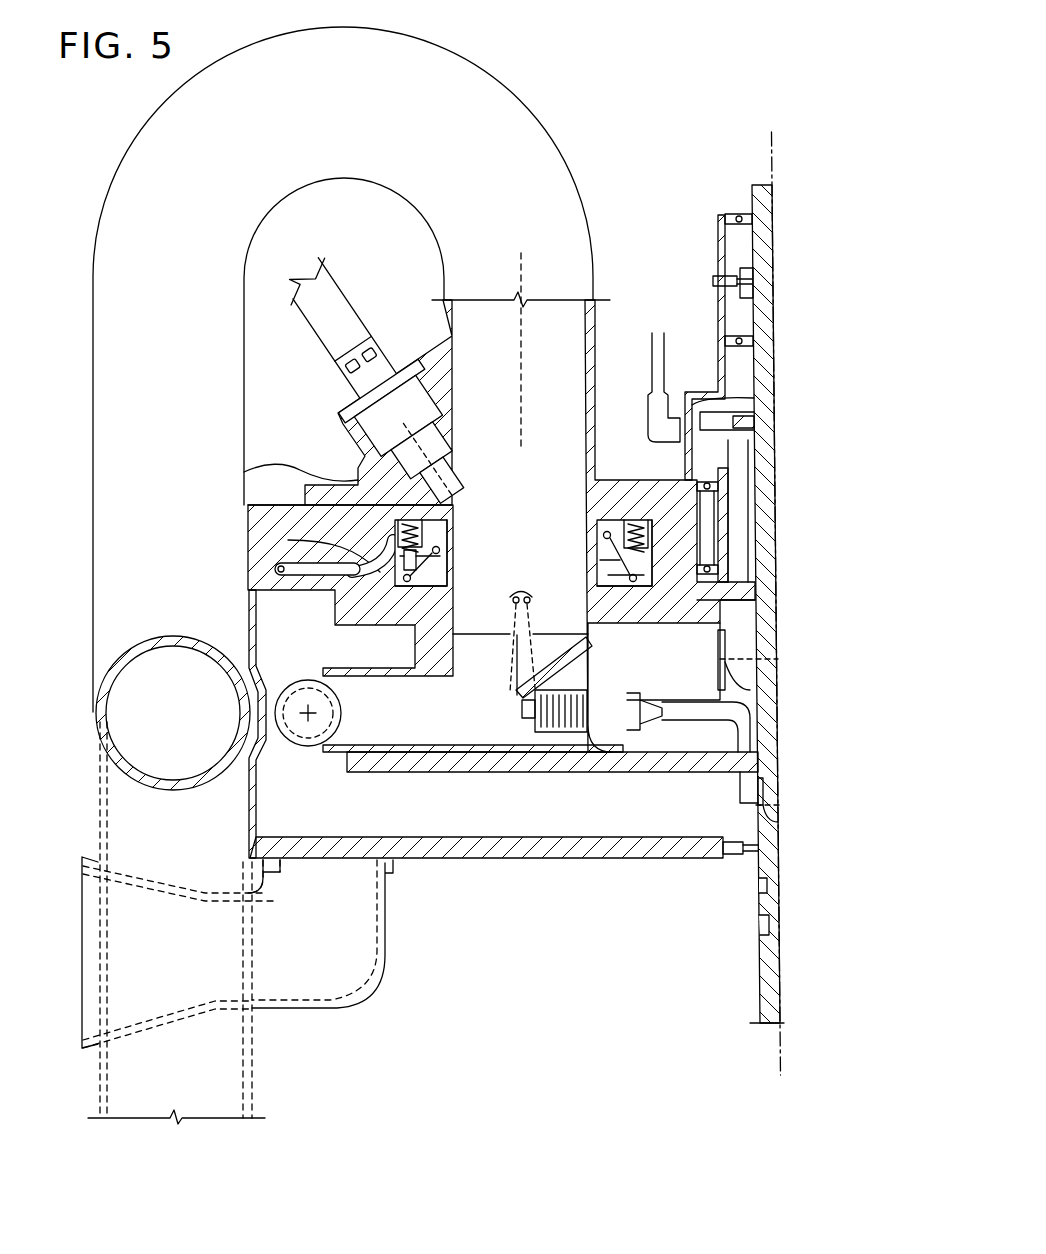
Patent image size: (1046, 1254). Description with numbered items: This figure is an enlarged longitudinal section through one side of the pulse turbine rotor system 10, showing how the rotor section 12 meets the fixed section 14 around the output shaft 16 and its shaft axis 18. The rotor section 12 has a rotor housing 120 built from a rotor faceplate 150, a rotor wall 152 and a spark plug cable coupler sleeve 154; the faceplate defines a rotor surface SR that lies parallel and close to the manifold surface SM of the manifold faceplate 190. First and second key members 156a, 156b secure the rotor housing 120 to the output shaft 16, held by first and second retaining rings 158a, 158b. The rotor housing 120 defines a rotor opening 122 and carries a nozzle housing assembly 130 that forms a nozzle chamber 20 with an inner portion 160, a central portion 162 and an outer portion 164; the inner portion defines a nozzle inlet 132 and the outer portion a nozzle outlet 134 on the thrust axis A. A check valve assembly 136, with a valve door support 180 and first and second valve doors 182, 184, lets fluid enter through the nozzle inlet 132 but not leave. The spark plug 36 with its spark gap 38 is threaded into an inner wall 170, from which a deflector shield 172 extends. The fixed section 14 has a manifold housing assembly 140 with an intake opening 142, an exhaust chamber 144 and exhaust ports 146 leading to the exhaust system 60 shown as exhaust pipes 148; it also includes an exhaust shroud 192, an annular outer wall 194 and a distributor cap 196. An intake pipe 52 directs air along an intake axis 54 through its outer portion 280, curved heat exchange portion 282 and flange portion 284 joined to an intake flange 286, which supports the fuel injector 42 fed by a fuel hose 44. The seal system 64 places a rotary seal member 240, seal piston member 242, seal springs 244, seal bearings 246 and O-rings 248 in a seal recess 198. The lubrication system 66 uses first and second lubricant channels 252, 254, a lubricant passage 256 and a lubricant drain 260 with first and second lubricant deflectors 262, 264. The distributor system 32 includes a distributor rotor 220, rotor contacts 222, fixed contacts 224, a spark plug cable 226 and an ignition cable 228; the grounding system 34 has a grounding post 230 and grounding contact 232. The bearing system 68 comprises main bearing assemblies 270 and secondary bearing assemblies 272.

The pulse turbine rotor system 10 is at (645, 95).
The rotor section 12 is at (657, 770).
The fixed section 14 is at (518, 863).
The output shaft 16 is at (760, 998).
The shaft axis 18 is at (779, 1050).
The nozzle chamber 20 is at (429, 693).
The distributor system 32 is at (645, 395).
The grounding system 34 is at (712, 302).
The spark plug 36 is at (548, 745).
The spark gap 38 is at (545, 720).
The fuel injector 42 is at (425, 414).
The fuel hose 44 is at (330, 286).
The intake pipe 52 is at (148, 147).
The intake axis 54 is at (519, 358).
The exhaust system 60 is at (396, 968).
The seal system 64 is at (578, 500).
The lubrication system 66 is at (300, 620).
The bearing system 68 is at (742, 870).
The rotor housing 120 is at (580, 778).
The rotor opening 122 is at (520, 619).
The nozzle housing assembly 130 is at (340, 664).
The nozzle inlet 132 is at (543, 660).
The nozzle outlet 134 is at (312, 726).
The check valve assembly 136 is at (527, 595).
The manifold housing assembly 140 is at (532, 866).
The intake opening 142 is at (497, 402).
The exhaust chamber 144 is at (445, 800).
The exhaust port 146 is at (357, 856).
The exhaust pipe 148 is at (308, 988).
The rotor faceplate 150 is at (387, 620).
The rotor wall 152 is at (660, 770).
The spark plug cable coupler sleeve 154 is at (740, 510).
The first key member 156a is at (738, 642).
The second key member 156b is at (765, 800).
The first retaining ring 158a is at (758, 665).
The second retaining ring 158b is at (769, 812).
The inner portion 160 is at (500, 645).
The central portion 162 is at (430, 716).
The outer portion 164 is at (320, 735).
The inner wall 170 is at (614, 682).
The deflector shield 172 is at (616, 670).
The valve door support 180 is at (533, 580).
The first valve door 182 is at (510, 660).
The second valve door 184 is at (522, 635).
The manifold faceplate 190 is at (290, 522).
The exhaust shroud 192 is at (575, 860).
The annular outer wall 194 is at (250, 792).
The distributor cap 196 is at (722, 250).
The seal recess 198 is at (625, 490).
The distributor rotor 220 is at (716, 428).
The rotor contact 222 is at (716, 418).
The fixed contact 224 is at (716, 410).
The spark plug cable 226 is at (740, 586).
The ignition cable 228 is at (656, 345).
The grounding post 230 is at (716, 280).
The grounding contact 232 is at (753, 276).
The rotary seal member 240 is at (447, 582).
The seal piston member 242 is at (440, 570).
The seal spring 244 is at (276, 507).
The seal bearing 246 is at (440, 549).
The O-ring 248 is at (440, 518).
The first lubricant channel 252 is at (712, 555).
The second lubricant channel 254 is at (340, 562).
The lubricant passage 256 is at (318, 541).
The lubricant drain 260 is at (283, 567).
The first lubricant deflector 262 is at (735, 596).
The second lubricant deflector 264 is at (316, 605).
The main bearing assembly 270 is at (737, 214).
The secondary bearing assembly 272 is at (712, 488).
The outer portion 280 is at (100, 1097).
The heat exchange portion 282 is at (128, 648).
The flange portion 284 is at (410, 62).
The intake flange 286 is at (300, 478).
The thrust axis A is at (303, 714).
The rotor surface SR is at (300, 581).
The manifold surface SM is at (252, 610).